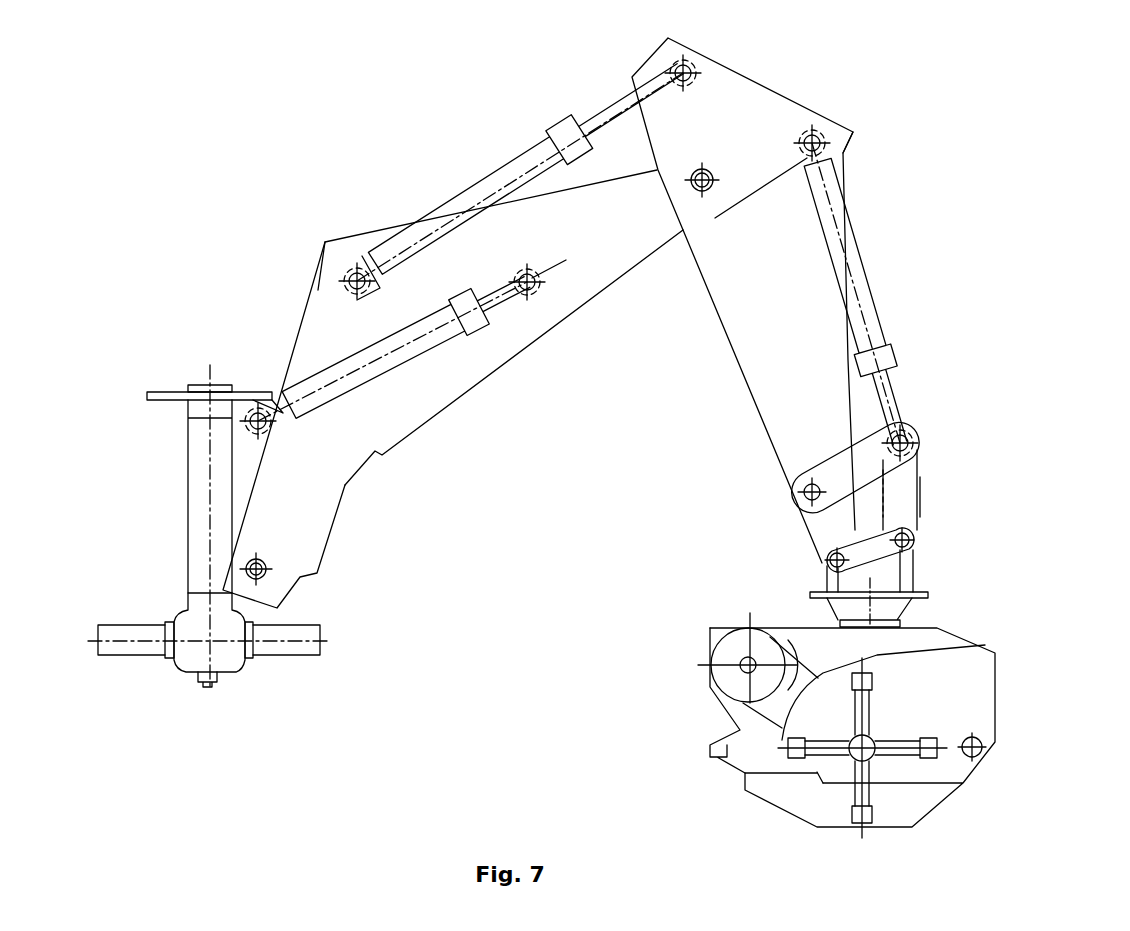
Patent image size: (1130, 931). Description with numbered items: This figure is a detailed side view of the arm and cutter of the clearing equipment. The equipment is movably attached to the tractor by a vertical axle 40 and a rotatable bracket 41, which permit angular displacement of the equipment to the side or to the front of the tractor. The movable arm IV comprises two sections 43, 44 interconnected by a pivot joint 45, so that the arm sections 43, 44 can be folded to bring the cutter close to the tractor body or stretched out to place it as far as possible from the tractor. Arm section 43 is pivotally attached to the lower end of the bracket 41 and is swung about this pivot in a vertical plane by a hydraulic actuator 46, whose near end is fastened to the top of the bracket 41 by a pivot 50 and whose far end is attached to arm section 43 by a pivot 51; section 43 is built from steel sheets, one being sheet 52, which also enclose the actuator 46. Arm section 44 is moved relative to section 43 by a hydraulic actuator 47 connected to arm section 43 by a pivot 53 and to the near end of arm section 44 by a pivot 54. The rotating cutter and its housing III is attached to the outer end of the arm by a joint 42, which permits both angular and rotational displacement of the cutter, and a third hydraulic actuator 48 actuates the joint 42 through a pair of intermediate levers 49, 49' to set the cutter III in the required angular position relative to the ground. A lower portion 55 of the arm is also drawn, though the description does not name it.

The vertical axle 40 is at (192, 403).
The rotatable bracket 41 is at (245, 475).
The joint 42 is at (885, 618).
The arm section 43 is at (458, 367).
The arm section 44 is at (763, 357).
The pivot joint 45 is at (698, 193).
The hydraulic actuator 46 is at (363, 368).
The hydraulic actuator 47 is at (507, 175).
The third hydraulic actuator 48 is at (883, 320).
The intermediate lever 49 is at (808, 467).
The intermediate lever 49' is at (950, 477).
The pivot 50 is at (254, 398).
The pivot 51 is at (538, 290).
The steel sheet 52 is at (358, 235).
The pivot 53 is at (342, 276).
The pivot 54 is at (713, 67).
The lower arm portion 55 is at (318, 510).
The movable arm IV is at (873, 152).
The rotating cutter III is at (1007, 693).